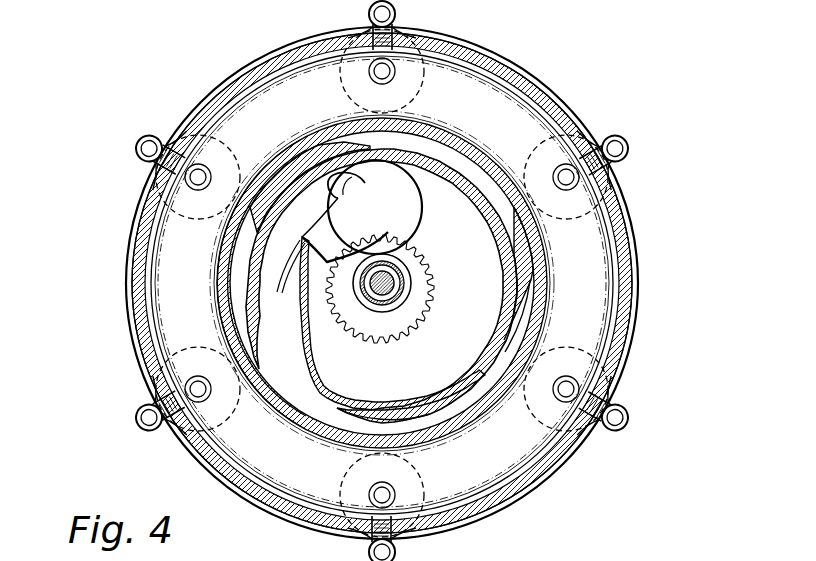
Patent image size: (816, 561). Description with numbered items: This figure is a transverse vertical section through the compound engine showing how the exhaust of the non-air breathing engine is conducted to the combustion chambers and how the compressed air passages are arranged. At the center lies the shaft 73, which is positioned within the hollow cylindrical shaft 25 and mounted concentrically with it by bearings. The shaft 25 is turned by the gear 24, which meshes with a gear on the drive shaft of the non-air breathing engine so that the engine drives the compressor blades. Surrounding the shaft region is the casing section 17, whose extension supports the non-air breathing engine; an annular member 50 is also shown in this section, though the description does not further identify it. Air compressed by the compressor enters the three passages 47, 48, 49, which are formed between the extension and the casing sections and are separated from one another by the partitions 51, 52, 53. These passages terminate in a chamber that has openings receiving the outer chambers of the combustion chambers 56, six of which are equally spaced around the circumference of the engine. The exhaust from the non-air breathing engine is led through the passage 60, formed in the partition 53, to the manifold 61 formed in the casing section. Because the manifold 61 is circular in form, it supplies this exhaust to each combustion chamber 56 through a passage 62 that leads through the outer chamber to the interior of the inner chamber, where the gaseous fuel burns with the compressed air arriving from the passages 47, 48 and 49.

The casing section 17 is at (642, 250).
The gear 24 is at (403, 333).
The cylindrical shaft 25 is at (402, 293).
The passage 47 is at (455, 155).
The passage 48 is at (528, 310).
The passage 49 is at (232, 298).
The ring 50 is at (428, 120).
The partition 51 is at (318, 150).
The partition 52 is at (541, 270).
The partition 53 is at (350, 428).
The combustion chamber 56 is at (206, 230).
The passage 60 is at (302, 368).
The manifold 61 is at (427, 478).
The passage 62 is at (205, 396).
The shaft 73 is at (394, 283).